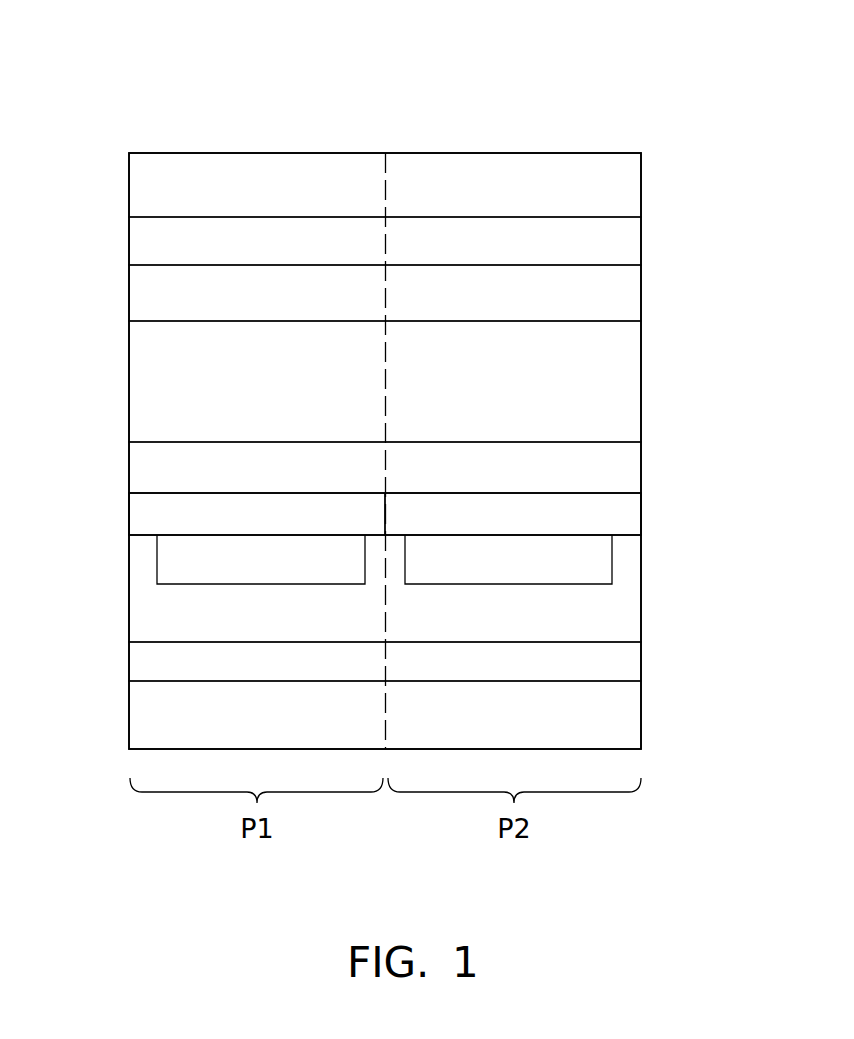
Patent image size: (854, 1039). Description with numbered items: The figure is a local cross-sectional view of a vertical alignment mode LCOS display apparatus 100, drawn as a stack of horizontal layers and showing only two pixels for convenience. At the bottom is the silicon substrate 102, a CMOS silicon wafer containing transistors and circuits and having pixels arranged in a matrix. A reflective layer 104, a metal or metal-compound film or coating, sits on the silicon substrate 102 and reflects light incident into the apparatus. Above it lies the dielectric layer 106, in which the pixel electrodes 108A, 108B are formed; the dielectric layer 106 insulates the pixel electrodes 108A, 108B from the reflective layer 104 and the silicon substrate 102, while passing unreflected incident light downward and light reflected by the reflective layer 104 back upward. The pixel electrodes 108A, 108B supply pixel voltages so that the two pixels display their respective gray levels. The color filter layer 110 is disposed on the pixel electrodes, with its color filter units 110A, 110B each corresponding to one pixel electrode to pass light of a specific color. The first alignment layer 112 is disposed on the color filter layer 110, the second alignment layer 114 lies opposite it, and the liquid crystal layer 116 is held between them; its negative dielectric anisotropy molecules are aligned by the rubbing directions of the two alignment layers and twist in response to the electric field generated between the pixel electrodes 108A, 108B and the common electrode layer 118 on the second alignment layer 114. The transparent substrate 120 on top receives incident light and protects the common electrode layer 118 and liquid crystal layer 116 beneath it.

The LCOS display apparatus 100 is at (108, 39).
The silicon substrate 102 is at (641, 717).
The reflective layer 104 is at (641, 658).
The dielectric layer 106 is at (641, 587).
The pixel electrode 108A is at (294, 572).
The pixel electrode 108B is at (544, 572).
The color filter layer 110 is at (641, 512).
The first region of layer 110 110A is at (294, 527).
The second region of layer 110 110B is at (544, 527).
The first alignment layer 112 is at (641, 468).
The second alignment layer 114 is at (641, 290).
The liquid crystal layer 116 is at (641, 382).
The common electrode layer 118 is at (641, 240).
The transparent substrate 120 is at (641, 187).